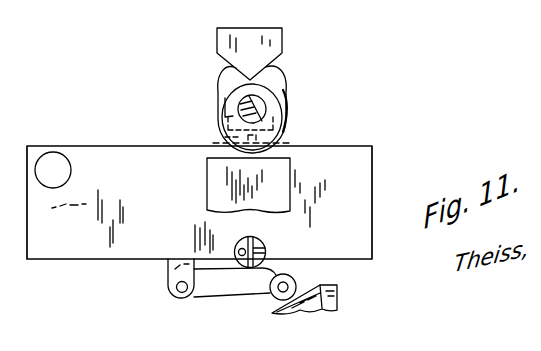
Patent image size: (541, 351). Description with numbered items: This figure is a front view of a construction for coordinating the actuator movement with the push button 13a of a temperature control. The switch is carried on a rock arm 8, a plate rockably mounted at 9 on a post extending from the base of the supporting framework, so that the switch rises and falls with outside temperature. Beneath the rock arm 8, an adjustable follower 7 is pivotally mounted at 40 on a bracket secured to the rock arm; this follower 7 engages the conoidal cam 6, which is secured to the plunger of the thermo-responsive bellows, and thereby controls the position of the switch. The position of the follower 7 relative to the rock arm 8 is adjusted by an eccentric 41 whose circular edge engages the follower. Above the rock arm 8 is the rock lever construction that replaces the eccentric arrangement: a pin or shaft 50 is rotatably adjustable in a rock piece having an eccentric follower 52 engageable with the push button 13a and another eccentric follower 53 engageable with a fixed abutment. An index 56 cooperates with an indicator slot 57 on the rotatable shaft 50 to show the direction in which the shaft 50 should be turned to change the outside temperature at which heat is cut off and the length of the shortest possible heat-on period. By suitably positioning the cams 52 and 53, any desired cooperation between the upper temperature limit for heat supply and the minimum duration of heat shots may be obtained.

The conoidal cam 6 is at (338, 297).
The adjustable follower 7 is at (284, 275).
The rock arm 8 is at (362, 186).
The rockable mounting 9 is at (52, 162).
The push button 13a is at (225, 138).
The pivot mounting of follower 40 is at (168, 289).
The eccentric 41 is at (237, 234).
The pin or shaft 50 is at (231, 119).
The eccentric follower 52 is at (294, 83).
The eccentric follower 53 is at (292, 135).
The index 56 is at (283, 45).
The slot 57 is at (245, 105).